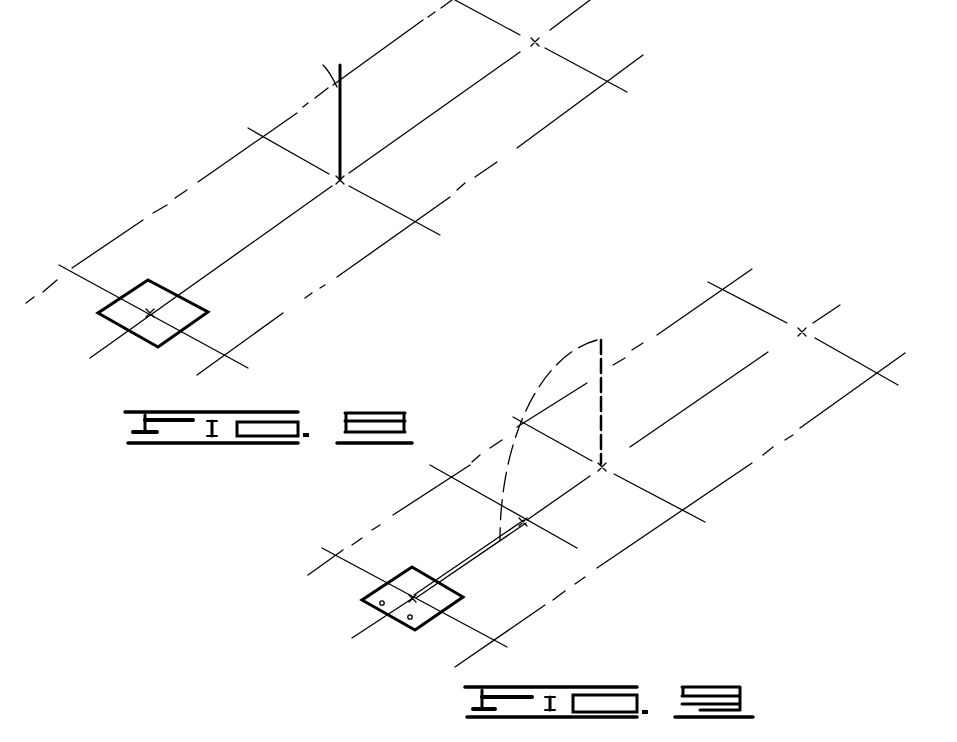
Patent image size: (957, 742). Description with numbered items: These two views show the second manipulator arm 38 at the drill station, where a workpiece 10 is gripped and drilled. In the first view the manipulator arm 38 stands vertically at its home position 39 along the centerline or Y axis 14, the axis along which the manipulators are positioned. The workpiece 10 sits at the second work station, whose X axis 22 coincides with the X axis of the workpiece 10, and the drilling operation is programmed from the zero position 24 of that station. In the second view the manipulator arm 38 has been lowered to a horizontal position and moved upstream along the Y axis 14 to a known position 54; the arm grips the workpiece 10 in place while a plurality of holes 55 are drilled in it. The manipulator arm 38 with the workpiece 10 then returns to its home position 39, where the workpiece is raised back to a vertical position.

In FIG. 8, the workpiece 10 is at (185, 310).
In FIG. 9, the workpiece 10 is at (455, 597).
In FIG. 8, the Y axis 14 is at (490, 75).
In FIG. 9, the Y axis 14 is at (707, 398).
In FIG. 8, the X axis 22 is at (240, 358).
In FIG. 9, the X axis 22 is at (507, 643).
In FIG. 8, the zero position 24 is at (152, 310).
In FIG. 8, the second manipulator arm 38 is at (342, 120).
In FIG. 9, the second manipulator arm 38 is at (603, 407).
In FIG. 8, the home position 39 is at (343, 180).
In FIG. 9, the home position 39 is at (603, 465).
In FIG. 9, the known position 54 is at (578, 550).
In FIG. 9, the holes 55 is at (410, 620).